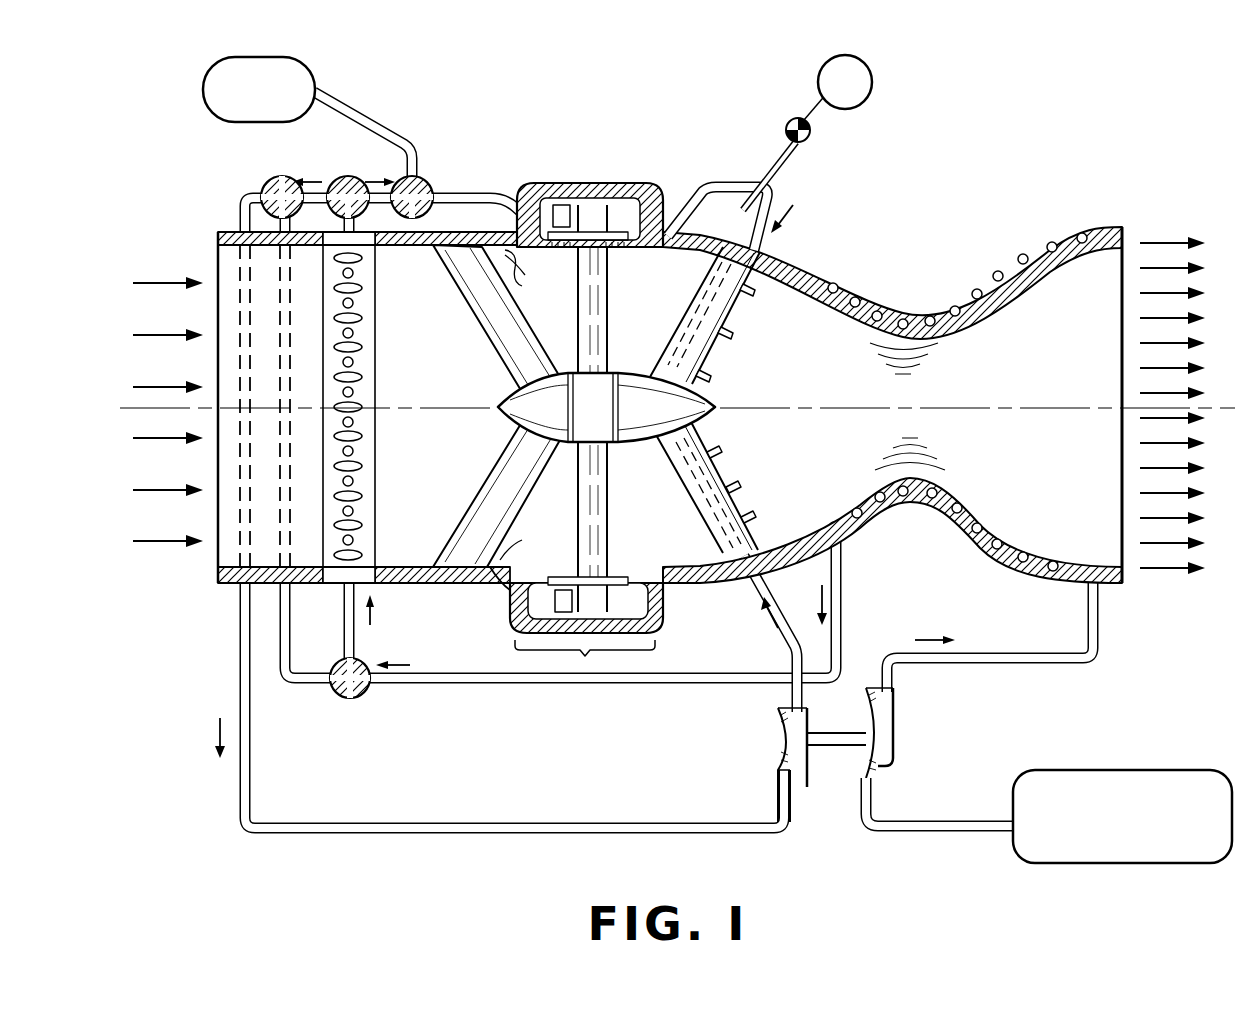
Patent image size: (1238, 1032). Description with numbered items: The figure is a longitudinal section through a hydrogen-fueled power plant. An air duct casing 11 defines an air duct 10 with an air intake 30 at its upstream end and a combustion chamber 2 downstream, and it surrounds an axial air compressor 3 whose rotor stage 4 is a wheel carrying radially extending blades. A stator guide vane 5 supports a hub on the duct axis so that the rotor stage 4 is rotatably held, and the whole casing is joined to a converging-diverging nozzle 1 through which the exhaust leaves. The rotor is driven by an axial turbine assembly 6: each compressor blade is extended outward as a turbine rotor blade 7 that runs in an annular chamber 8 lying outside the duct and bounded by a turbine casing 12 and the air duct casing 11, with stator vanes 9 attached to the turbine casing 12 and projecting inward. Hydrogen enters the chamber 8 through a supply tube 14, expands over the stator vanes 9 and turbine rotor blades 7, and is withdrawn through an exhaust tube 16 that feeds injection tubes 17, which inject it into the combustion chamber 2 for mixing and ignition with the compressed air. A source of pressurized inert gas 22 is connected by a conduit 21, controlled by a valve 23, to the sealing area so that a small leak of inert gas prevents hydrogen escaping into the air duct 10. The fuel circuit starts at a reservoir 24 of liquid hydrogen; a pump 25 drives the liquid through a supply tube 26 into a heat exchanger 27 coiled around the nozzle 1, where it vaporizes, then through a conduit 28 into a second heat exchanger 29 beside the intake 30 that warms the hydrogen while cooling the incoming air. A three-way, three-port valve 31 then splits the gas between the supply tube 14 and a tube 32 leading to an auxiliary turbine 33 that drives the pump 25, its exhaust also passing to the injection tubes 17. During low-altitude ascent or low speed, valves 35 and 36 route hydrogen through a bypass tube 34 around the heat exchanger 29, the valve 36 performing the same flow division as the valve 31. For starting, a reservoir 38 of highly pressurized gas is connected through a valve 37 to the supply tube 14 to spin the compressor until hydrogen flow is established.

The converging-diverging nozzle 1 is at (1080, 255).
The combustion chamber 2 is at (818, 292).
The axial air compressor 3 is at (500, 583).
The rotor stage 4 is at (595, 522).
The stator guide vane 5 is at (478, 502).
The axial turbine assembly 6 is at (585, 659).
The turbine rotor blade 7 is at (587, 200).
The annular chamber 8 is at (648, 617).
The stator vanes 9 is at (558, 205).
The air duct 10 is at (682, 583).
The air duct casing 11 is at (527, 276).
The turbine casing 12 is at (632, 192).
The supply tube 14 is at (493, 192).
The exhaust tube 16 is at (775, 200).
The injection tubes 17 is at (692, 306).
The conduit 21 is at (773, 165).
The source of pressurized inert gas 22 is at (820, 78).
The valve 23 is at (785, 129).
The reservoir 24 is at (1100, 829).
The pump 25 is at (885, 740).
The supply tube 26 is at (1097, 635).
The heat exchanger 27 is at (987, 540).
The conduit 28 is at (575, 690).
The second heat exchanger 29 is at (365, 333).
The air intake 30 is at (242, 247).
The three-way, three-port valve 31 is at (350, 177).
The tube 32 is at (240, 194).
The auxiliary turbine 33 is at (788, 735).
The tube 34 is at (283, 645).
The valve 35 is at (345, 699).
The valve 36 is at (276, 177).
The valve 37 is at (428, 185).
The reservoir of highly pressurized gas 38 is at (243, 104).